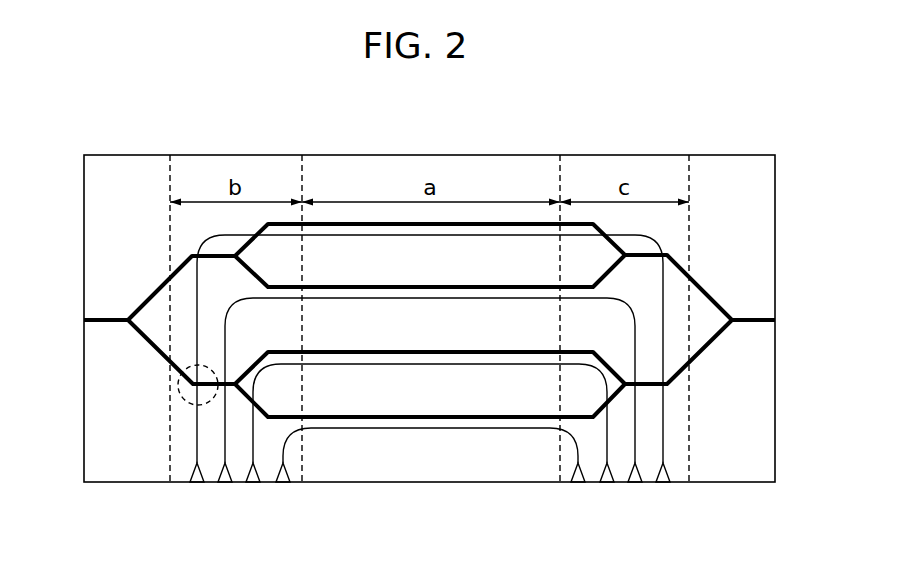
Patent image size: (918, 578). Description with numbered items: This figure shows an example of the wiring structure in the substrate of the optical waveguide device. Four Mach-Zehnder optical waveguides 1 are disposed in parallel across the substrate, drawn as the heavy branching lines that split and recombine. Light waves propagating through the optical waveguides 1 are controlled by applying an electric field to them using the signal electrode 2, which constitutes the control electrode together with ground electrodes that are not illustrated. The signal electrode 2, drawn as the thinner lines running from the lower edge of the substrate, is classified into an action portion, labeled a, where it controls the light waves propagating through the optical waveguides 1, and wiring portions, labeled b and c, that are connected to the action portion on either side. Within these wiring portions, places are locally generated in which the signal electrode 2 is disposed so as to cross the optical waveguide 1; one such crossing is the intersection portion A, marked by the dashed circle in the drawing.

The optical waveguide 1 is at (755, 316).
The signal electrode 2 is at (665, 437).
The intersection portion A is at (187, 400).